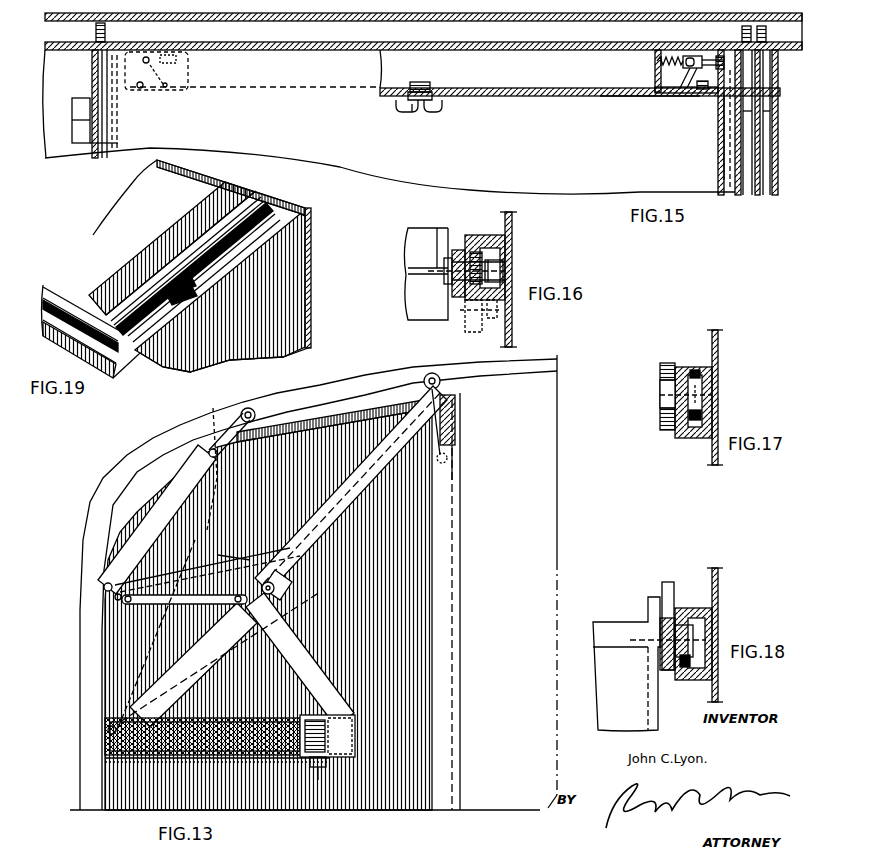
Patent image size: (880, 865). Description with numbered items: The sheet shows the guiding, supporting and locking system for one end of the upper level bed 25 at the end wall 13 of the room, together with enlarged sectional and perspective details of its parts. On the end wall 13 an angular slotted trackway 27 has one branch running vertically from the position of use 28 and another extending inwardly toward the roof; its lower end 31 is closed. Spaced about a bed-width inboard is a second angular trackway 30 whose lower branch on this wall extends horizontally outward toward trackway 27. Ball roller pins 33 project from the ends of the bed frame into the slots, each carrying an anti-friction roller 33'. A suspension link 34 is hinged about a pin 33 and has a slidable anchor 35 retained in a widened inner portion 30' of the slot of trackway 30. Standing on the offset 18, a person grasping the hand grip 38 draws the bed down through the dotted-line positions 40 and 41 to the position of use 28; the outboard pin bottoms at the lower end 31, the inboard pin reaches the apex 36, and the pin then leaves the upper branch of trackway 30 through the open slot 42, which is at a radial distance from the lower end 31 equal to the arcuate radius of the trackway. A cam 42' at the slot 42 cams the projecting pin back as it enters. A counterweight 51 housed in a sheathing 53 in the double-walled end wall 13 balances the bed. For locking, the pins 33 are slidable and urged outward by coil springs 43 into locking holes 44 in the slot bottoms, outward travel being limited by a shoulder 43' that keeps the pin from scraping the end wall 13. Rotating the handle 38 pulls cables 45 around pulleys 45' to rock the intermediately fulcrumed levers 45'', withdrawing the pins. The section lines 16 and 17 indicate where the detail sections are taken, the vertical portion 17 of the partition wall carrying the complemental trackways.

In FIG. 15, the end wall 13 is at (422, 104).
In FIG. 19, the end wall 13 is at (290, 210).
In FIG. 16, the end wall 13 is at (512, 222).
In FIG. 17, the end wall 13 is at (718, 340).
In FIG. 18, the end wall 13 is at (718, 592).
In FIG. 13, the end wall 13 is at (410, 628).
In FIG. 13, the section line 16— 16 is at (201, 539).
In FIG. 13, the vertical portion of partition wall 17 is at (277, 637).
In FIG. 13, the offset 18 is at (351, 489).
In FIG. 15, the bed 25 is at (500, 94).
In FIG. 16, the bed 25 is at (406, 305).
In FIG. 18, the bed 25 is at (596, 698).
In FIG. 13, the bed 25 is at (110, 758).
In FIG. 13, the angular slotted trackway 27 is at (167, 515).
In FIG. 13, the position of use 28 is at (122, 810).
In FIG. 19, the trackway 30 is at (184, 262).
In FIG. 16, the trackway 30 is at (510, 266).
In FIG. 17, the trackway 30 is at (693, 417).
In FIG. 18, the trackway 30 is at (693, 630).
In FIG. 13, the trackway 30 is at (330, 435).
In FIG. 19, the widened inner portion of slot 30' is at (187, 239).
In FIG. 17, the widened inner portion of slot 30' is at (689, 358).
In FIG. 13, the lower end of trackway 31 is at (106, 740).
In FIG. 15, the ball roller pin 33 is at (428, 55).
In FIG. 16, the ball roller pin 33 is at (463, 285).
In FIG. 18, the ball roller pin 33 is at (668, 655).
In FIG. 13, the ball roller pin 33 is at (272, 565).
In FIG. 16, the anti-friction roller 33' is at (486, 247).
In FIG. 18, the anti-friction roller 33' is at (687, 680).
In FIG. 15, the suspension link 34 is at (722, 162).
In FIG. 16, the suspension link 34 is at (460, 250).
In FIG. 17, the suspension link 34 is at (660, 376).
In FIG. 18, the suspension link 34 is at (664, 590).
In FIG. 13, the suspension link 34 is at (455, 403).
In FIG. 17, the slidable anchor 35 is at (700, 386).
In FIG. 13, the slidable anchor 35 is at (300, 478).
In FIG. 19, the apex 36 is at (120, 362).
In FIG. 13, the apex 36 is at (271, 597).
In FIG. 15, the hand grip 38 is at (418, 102).
In FIG. 13, the hand grip 38 is at (318, 780).
In FIG. 13, the dotted-line position 40 is at (207, 576).
In FIG. 13, the dotted-line position 41 is at (193, 665).
In FIG. 19, the open slot 42 is at (194, 334).
In FIG. 16, the open slot 42 is at (480, 325).
In FIG. 13, the open slot 42 is at (277, 585).
In FIG. 19, the cam 42' is at (220, 327).
In FIG. 16, the cam 42' is at (522, 307).
In FIG. 15, the coil spring 43 is at (684, 57).
In FIG. 13, the coil spring 43 is at (219, 634).
In FIG. 15, the shoulder 43' is at (695, 44).
In FIG. 19, the locking hole 44 is at (163, 288).
In FIG. 16, the locking hole 44 is at (505, 270).
In FIG. 15, the cable 45 is at (638, 81).
In FIG. 15, the pulley 45' is at (703, 104).
In FIG. 15, the intermediately fulcrumed lever 45'' is at (680, 97).
In FIG. 13, the counterweight 51 is at (450, 458).
In FIG. 13, the sheathing 53 is at (453, 478).